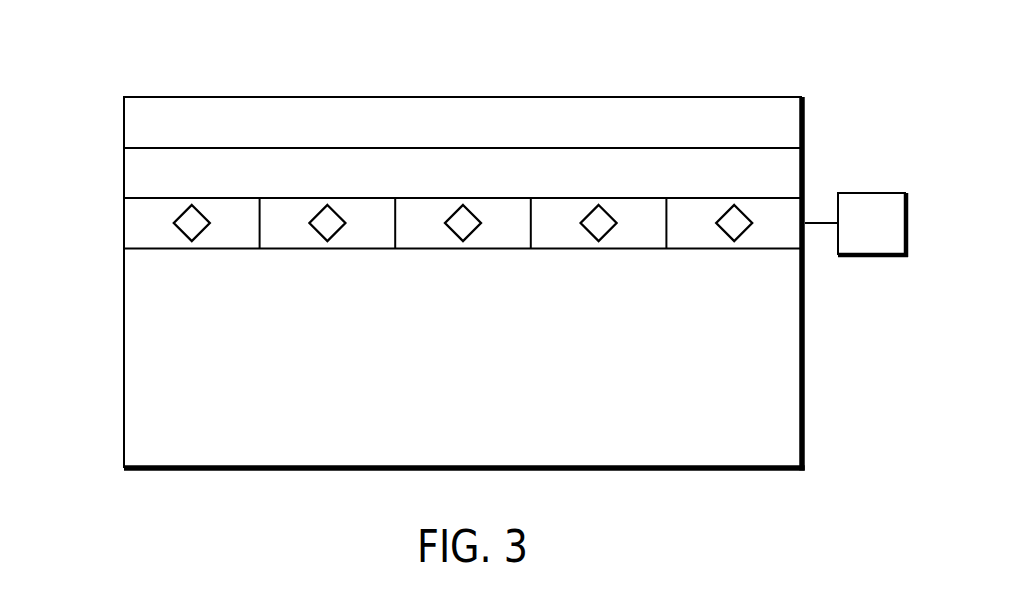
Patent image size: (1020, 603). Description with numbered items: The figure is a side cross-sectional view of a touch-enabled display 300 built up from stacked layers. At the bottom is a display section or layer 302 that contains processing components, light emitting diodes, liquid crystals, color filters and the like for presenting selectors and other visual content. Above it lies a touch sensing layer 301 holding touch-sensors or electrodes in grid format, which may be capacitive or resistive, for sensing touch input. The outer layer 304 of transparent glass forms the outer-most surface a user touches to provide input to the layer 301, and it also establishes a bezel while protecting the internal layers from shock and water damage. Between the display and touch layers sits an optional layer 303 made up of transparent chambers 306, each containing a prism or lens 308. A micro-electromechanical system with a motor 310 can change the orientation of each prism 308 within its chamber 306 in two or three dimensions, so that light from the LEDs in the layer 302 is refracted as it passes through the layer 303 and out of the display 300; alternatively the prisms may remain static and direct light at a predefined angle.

The touch-enabled display 300 is at (122, 56).
The touch sensing layer 301 is at (783, 186).
The display layer 302 is at (783, 442).
The prism layer 303 is at (422, 173).
The outer layer 304 is at (783, 136).
The transparent chamber 306 is at (331, 173).
The prism 308 is at (327, 206).
The motor 310 is at (872, 193).